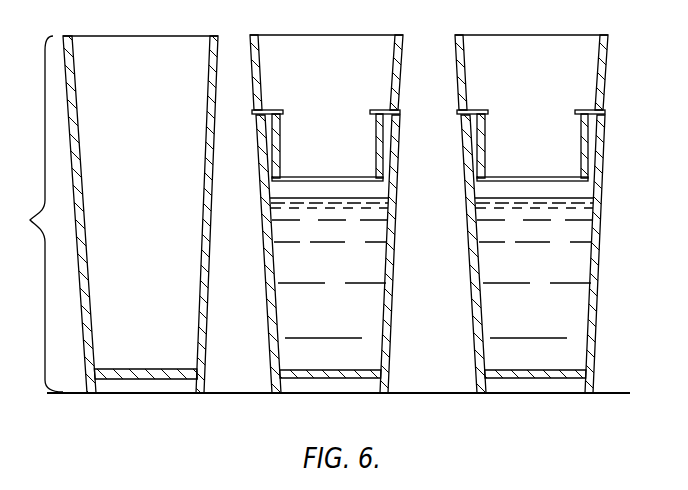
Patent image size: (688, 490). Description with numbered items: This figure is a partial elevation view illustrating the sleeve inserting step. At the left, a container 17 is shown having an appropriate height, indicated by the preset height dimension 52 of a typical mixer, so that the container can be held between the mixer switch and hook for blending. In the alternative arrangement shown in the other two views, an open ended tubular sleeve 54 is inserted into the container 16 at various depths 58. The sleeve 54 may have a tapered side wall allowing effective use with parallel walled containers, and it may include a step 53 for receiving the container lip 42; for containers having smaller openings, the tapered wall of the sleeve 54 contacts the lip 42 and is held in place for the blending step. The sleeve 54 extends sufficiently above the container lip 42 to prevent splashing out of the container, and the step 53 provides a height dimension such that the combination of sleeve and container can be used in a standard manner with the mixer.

The container 16 is at (385, 202).
The containers 17 is at (85, 353).
The container lip 42 is at (75, 37).
The preset height dimension 52 is at (22, 225).
The step 53 is at (268, 108).
The open ended tubular sleeve 54 is at (403, 72).
The depths 58 is at (398, 163).